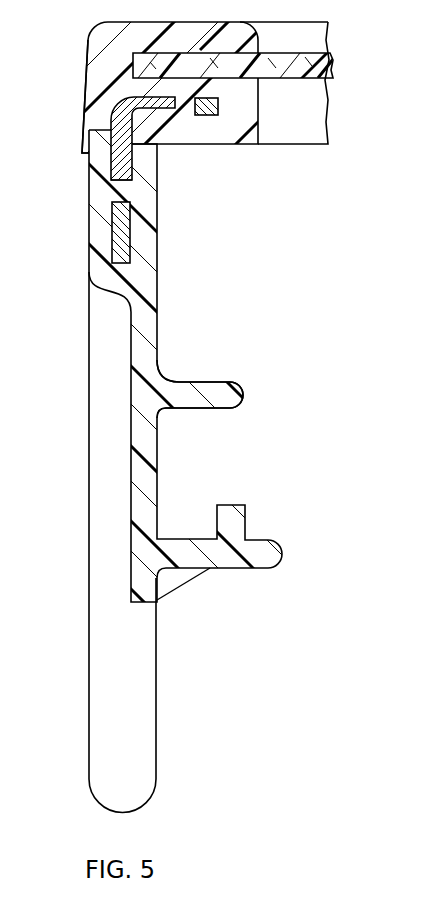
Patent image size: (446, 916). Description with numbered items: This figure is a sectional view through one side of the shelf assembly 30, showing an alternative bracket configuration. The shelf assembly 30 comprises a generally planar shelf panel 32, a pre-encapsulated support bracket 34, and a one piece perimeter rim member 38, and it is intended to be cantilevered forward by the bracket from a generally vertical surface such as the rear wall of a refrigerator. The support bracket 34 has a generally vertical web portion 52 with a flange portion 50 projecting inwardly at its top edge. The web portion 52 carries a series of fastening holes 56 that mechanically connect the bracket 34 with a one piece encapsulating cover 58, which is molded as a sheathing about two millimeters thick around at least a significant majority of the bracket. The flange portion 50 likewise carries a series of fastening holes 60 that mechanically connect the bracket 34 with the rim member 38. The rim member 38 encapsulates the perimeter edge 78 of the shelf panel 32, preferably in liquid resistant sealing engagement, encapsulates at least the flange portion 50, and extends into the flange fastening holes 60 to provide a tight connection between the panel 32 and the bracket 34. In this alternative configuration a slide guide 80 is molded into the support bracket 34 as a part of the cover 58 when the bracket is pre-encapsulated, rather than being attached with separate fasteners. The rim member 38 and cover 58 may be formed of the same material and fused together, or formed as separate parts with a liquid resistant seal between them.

The shelf assembly 30 is at (299, 727).
The shelf panel 32 is at (333, 78).
The support bracket 34 is at (142, 708).
The perimeter rim member 38 is at (318, 35).
The flange portion 50 is at (218, 107).
The web portion 52 is at (127, 262).
The fastening holes 56 is at (130, 193).
The encapsulating cover 58 is at (148, 325).
The fastening holes 60 is at (188, 104).
The perimeter edge 78 is at (141, 63).
The slide guide 80 is at (289, 403).